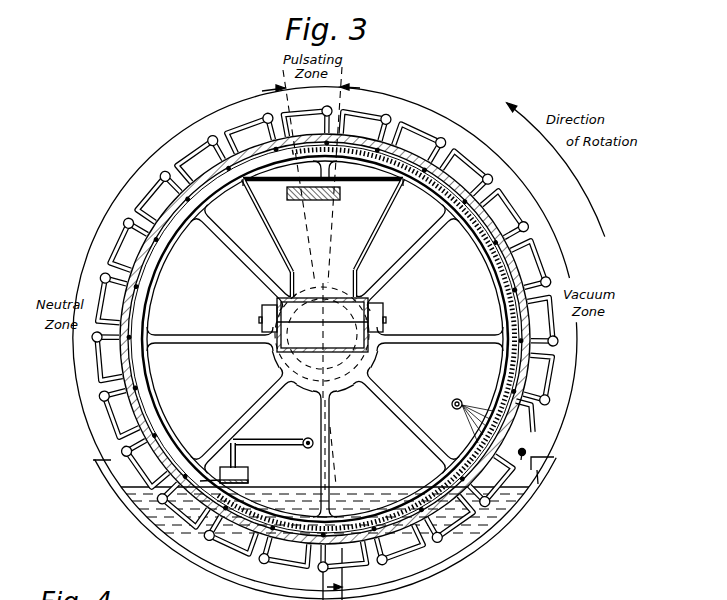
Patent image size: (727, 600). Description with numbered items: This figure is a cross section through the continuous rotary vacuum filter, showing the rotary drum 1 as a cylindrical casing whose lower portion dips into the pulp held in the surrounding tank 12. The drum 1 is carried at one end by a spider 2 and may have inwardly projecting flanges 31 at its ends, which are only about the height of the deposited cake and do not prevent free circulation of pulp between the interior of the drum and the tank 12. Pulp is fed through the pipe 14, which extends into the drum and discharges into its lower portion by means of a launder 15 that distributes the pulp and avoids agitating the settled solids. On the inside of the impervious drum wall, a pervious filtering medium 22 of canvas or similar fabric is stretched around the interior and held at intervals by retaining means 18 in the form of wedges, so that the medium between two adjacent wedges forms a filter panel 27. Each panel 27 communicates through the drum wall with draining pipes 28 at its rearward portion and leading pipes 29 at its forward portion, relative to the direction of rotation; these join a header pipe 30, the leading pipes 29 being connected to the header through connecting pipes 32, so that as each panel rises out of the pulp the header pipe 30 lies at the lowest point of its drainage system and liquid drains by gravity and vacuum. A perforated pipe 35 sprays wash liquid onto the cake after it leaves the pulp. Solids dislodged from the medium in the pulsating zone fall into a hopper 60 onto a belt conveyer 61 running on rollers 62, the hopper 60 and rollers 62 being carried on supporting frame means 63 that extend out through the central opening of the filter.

The rotary drum 1 is at (491, 213).
The spider 2 is at (197, 344).
The tank 12 is at (497, 503).
The pipe 14 is at (307, 437).
The launder 15 is at (248, 474).
The retaining means 18 is at (160, 238).
The filtering medium 22 is at (180, 220).
The filter panel 27 is at (156, 213).
The draining pipes 28 is at (461, 137).
The leading pipes 29 is at (335, 113).
The header pipes 30 is at (526, 452).
The inwardly projecting flanges 31 is at (148, 400).
The connecting pipes 32 is at (482, 157).
The perforated pipe 35 is at (455, 400).
The hopper 60 is at (382, 223).
The belt conveyer 61 is at (350, 282).
The rollers 62 is at (378, 297).
The supporting frame means 63 is at (391, 329).